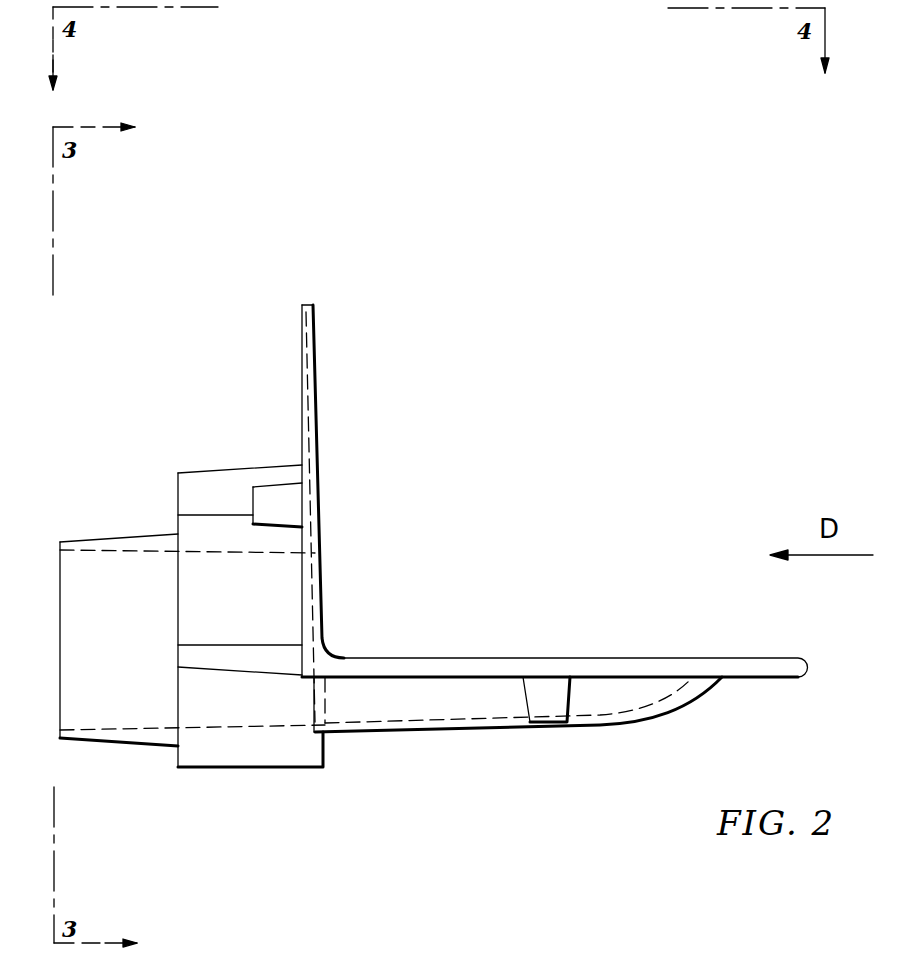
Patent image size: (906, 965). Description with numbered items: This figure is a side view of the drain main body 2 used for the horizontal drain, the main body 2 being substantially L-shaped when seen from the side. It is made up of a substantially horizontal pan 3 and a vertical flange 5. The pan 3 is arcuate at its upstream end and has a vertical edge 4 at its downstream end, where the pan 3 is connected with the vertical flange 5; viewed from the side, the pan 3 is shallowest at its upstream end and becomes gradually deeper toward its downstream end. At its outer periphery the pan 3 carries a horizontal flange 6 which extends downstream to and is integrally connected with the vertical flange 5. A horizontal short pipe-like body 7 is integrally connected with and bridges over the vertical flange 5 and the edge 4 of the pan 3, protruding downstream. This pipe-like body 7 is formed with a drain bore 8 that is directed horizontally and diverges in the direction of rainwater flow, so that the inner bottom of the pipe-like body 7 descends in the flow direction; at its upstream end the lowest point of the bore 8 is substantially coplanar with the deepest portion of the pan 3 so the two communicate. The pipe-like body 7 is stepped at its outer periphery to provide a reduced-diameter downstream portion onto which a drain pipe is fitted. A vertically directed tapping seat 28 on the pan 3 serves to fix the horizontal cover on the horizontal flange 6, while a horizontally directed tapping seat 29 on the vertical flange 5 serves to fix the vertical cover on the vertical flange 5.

The drain main body 2 is at (407, 531).
The horizontal pan 3 is at (593, 730).
The vertical edge 4 is at (315, 707).
The vertical flange 5 is at (300, 362).
The horizontal flange 6 is at (727, 657).
The horizontal short pipe-like body 7 is at (170, 465).
The drain bore 8 is at (115, 695).
The tapping seat 28 is at (523, 700).
The tapping seat 29 is at (267, 486).